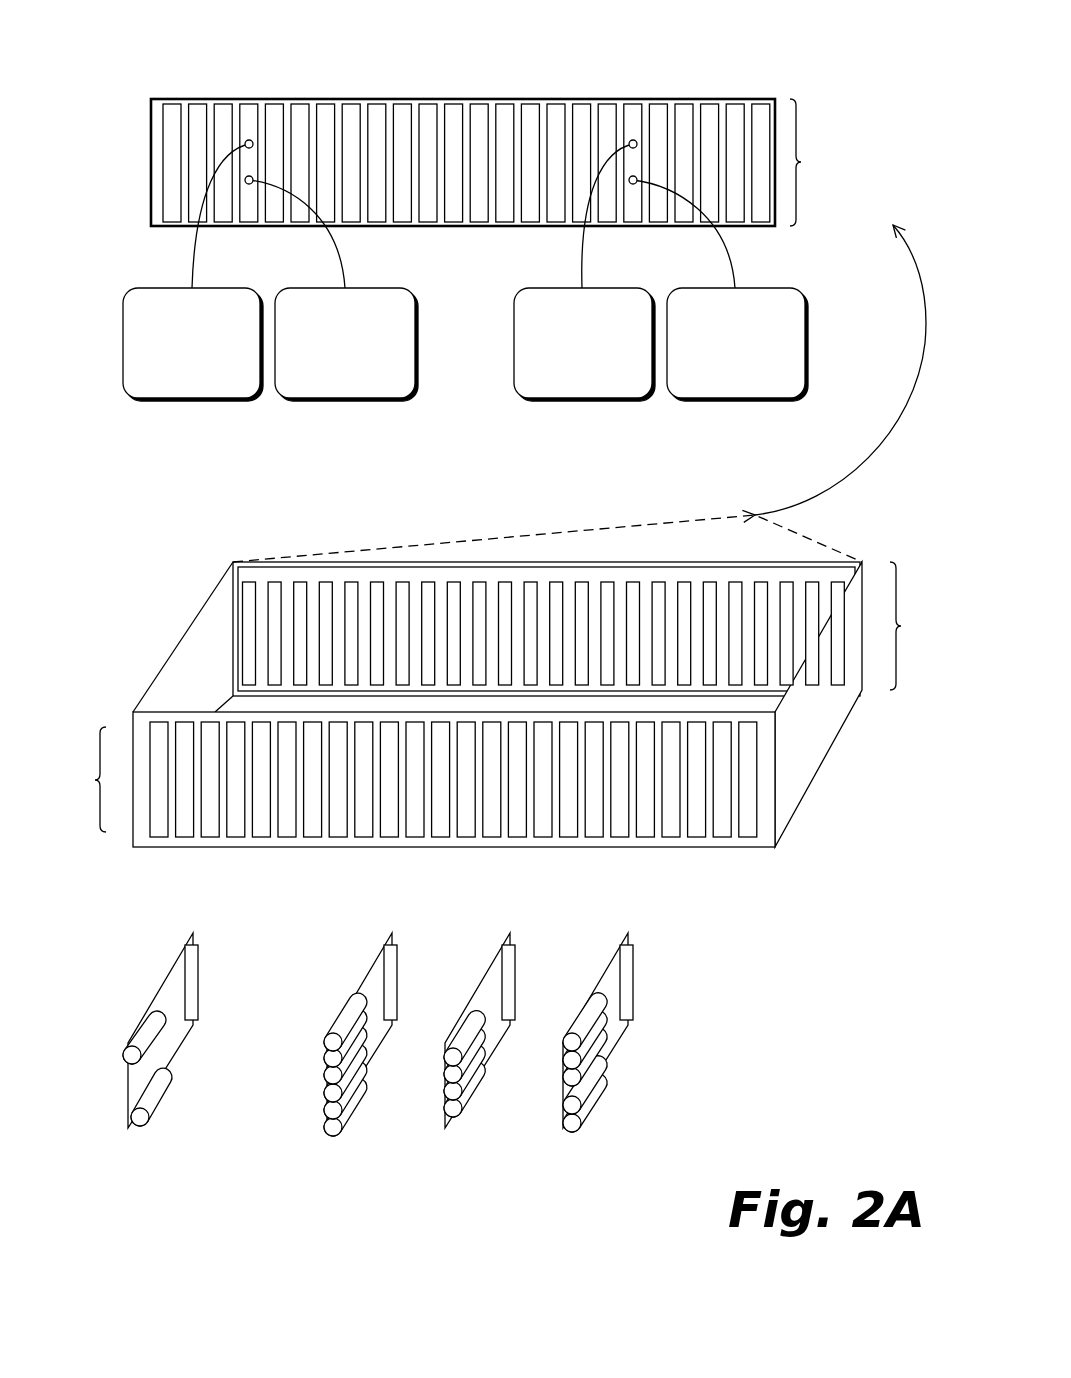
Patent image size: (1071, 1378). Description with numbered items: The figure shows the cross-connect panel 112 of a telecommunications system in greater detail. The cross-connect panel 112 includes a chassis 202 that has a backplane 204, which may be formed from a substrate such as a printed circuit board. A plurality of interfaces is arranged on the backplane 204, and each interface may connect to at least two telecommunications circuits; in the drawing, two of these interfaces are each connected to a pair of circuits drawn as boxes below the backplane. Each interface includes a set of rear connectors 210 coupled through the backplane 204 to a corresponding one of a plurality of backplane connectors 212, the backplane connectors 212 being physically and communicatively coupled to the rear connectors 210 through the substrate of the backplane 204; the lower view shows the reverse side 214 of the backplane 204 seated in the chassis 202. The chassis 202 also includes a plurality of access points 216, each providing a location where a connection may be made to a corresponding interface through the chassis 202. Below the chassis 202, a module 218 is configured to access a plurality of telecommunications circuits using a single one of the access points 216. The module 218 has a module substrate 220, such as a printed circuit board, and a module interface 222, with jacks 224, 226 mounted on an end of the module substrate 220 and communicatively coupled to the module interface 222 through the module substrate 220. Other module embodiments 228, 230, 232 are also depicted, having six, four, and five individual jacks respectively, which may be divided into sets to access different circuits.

The cross-connect panel 112 is at (121, 38).
The chassis 202 is at (812, 735).
The backplane 204 is at (588, 397).
The rear connectors 210 is at (455, 132).
The backplane connector 212 is at (149, 121).
The reverse side of connector board 214 is at (316, 623).
The access points 216 is at (403, 779).
The module 218 is at (208, 1063).
The module substrate 220 is at (180, 1043).
The module interface 222 is at (206, 972).
The jack 224 is at (153, 1048).
The jack 226 is at (162, 1118).
The module 228 is at (336, 1162).
The module 230 is at (464, 1162).
The module 232 is at (583, 1162).